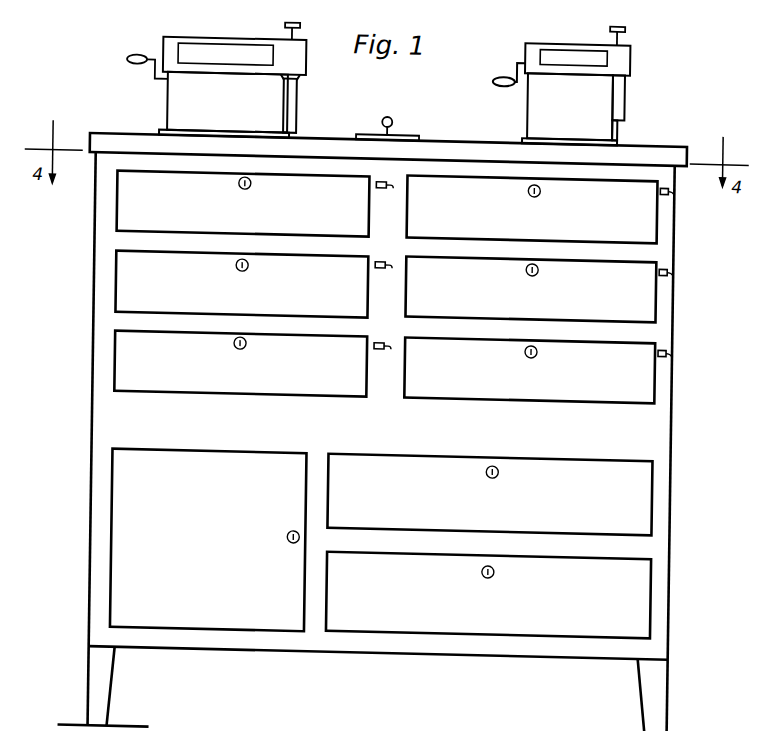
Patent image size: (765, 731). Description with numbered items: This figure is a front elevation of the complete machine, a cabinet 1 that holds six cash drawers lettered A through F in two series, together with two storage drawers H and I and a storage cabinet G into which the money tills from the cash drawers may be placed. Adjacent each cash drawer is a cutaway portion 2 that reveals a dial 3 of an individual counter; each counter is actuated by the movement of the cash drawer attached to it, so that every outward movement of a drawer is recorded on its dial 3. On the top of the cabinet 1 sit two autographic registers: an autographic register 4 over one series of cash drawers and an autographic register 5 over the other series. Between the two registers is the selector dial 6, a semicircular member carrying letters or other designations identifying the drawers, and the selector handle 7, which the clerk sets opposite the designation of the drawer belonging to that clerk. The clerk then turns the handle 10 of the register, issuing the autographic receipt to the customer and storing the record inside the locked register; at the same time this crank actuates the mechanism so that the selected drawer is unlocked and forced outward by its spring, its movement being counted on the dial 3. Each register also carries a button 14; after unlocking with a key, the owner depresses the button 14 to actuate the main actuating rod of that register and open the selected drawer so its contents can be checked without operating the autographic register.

The cabinet 1 is at (108, 198).
The cutaway portion 2 is at (535, 262).
The dial 3 is at (540, 280).
The autographic register 4 is at (263, 101).
The autographic register 5 is at (599, 86).
The selector dial 6 is at (412, 127).
The selector handle 7 is at (390, 110).
The handle 10 is at (126, 55).
The button 14 is at (297, 28).